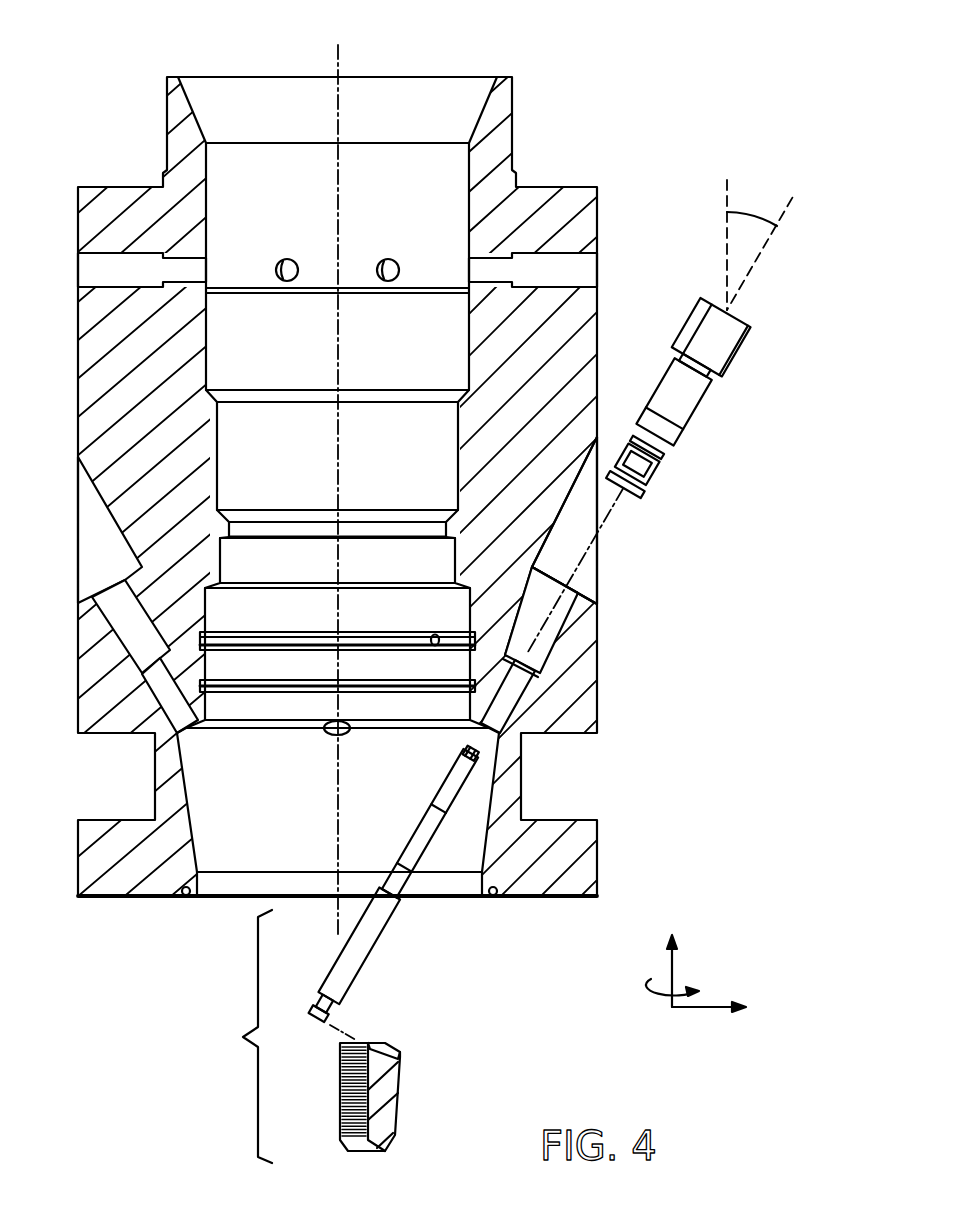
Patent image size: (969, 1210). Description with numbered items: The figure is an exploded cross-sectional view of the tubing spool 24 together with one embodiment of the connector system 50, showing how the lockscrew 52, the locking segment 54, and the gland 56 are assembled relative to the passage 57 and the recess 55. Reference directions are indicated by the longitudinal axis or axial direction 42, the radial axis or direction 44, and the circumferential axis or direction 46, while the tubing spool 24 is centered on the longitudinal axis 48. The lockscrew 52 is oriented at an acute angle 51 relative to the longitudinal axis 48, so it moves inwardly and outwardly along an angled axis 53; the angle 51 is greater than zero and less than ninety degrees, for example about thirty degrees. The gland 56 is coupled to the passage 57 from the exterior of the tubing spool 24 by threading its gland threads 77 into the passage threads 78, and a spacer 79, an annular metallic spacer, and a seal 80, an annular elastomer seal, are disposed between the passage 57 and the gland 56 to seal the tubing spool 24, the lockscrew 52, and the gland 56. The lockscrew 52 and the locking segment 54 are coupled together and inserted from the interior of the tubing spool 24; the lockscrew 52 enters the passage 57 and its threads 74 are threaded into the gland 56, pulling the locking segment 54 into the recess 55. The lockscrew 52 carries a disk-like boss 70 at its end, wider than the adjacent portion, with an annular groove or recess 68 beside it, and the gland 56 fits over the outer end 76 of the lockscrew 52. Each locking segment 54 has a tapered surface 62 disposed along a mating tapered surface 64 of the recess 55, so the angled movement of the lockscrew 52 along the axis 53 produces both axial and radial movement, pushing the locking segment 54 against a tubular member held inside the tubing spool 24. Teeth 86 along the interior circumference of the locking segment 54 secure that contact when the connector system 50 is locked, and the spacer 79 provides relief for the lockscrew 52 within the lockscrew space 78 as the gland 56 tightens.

The tubing spool 24 is at (78, 378).
The longitudinal axis or axial direction 42 is at (675, 965).
The radial axis or direction 44 is at (682, 1010).
The circumferential axis or direction 46 is at (657, 995).
The longitudinal axis 48 is at (335, 63).
The connector system 50 is at (776, 150).
The acute angle 51 is at (756, 212).
The lockscrew 52 is at (374, 952).
The angled axis 53 is at (750, 272).
The locking segment 54 is at (375, 1103).
The recess 55 is at (473, 832).
The gland 56 is at (740, 350).
The passage 57 is at (552, 642).
The tapered surface 62 is at (395, 1122).
The mating tapered surface 64 is at (470, 862).
The recess 68 is at (318, 1003).
The boss 70 is at (310, 1012).
The threads 74 is at (425, 823).
The outer end 76 is at (455, 787).
The gland threads 77 is at (688, 403).
The passage threads 78 is at (566, 612).
The spacer 79 is at (661, 464).
The seal 80 is at (621, 458).
The teeth 86 is at (345, 1108).